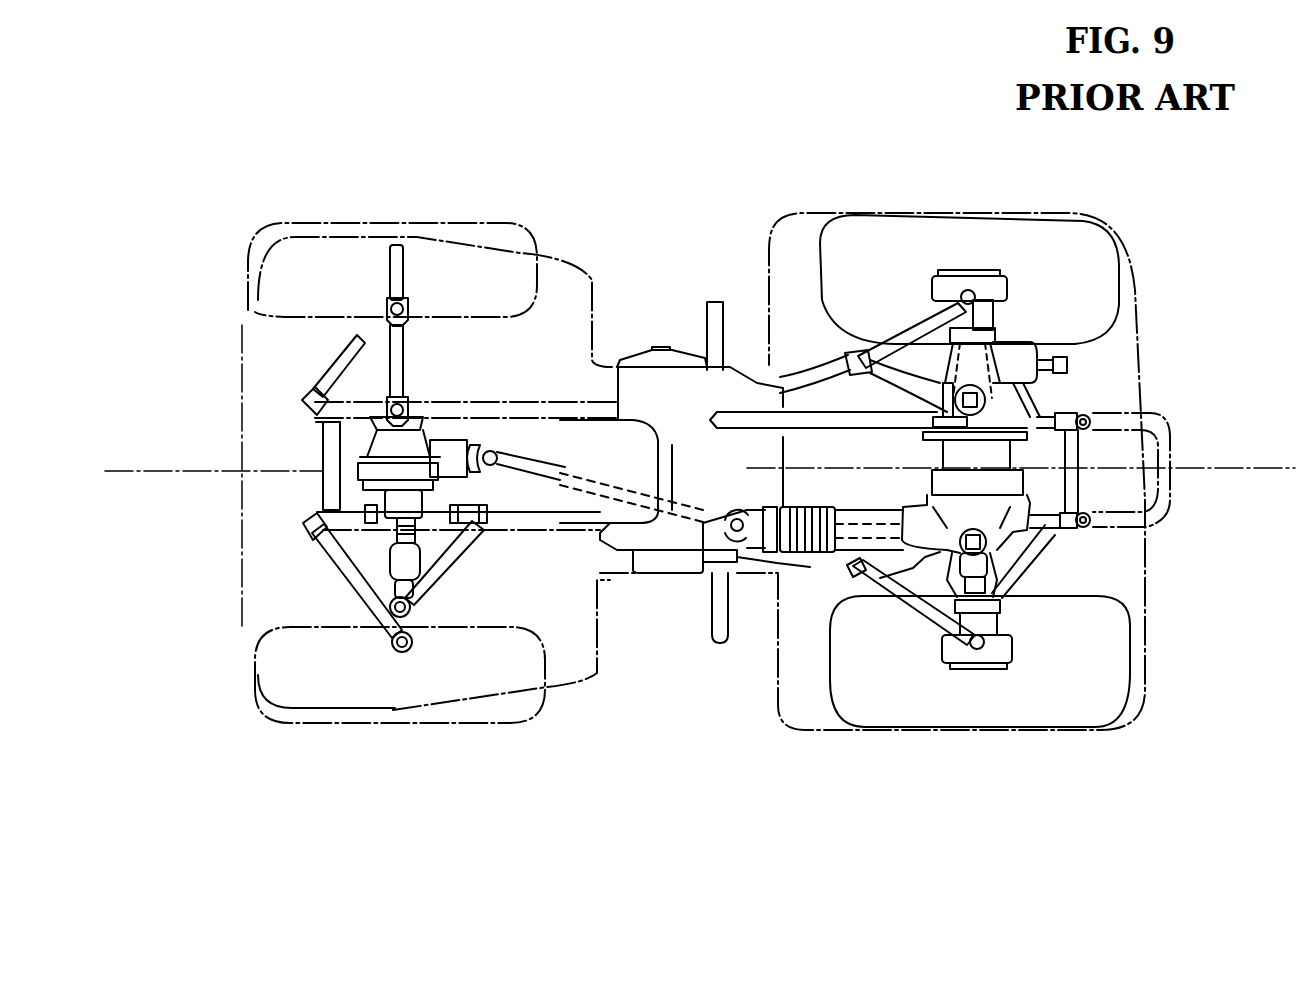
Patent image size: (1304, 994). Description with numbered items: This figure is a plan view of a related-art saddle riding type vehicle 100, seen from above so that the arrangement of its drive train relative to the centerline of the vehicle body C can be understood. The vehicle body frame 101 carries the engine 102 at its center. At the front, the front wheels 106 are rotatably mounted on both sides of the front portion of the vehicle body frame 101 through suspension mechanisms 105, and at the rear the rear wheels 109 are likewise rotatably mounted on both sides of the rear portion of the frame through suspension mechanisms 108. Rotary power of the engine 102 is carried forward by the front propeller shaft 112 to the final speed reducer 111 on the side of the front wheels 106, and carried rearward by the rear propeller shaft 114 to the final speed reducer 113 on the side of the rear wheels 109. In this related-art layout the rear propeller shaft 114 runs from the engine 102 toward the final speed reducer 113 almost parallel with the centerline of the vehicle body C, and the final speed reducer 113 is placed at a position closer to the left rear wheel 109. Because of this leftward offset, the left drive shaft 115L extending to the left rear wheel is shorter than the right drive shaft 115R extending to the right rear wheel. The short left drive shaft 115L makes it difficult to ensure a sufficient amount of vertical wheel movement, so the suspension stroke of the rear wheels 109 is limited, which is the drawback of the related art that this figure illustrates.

The saddle riding type vehicle 100 is at (228, 117).
The vehicle body frame 101 is at (512, 394).
The engine 102 is at (663, 577).
The suspension mechanism 105 is at (337, 356).
The front wheel 106 is at (363, 223).
The suspension mechanism 108 is at (1060, 389).
The rear wheel 109 is at (835, 225).
The final speed reducer 111 is at (355, 473).
The front propeller shaft 112 is at (565, 472).
The final speed reducer 113 is at (1036, 488).
The rear propeller shaft 114 is at (852, 538).
The right drive shaft 115R is at (993, 320).
The left drive shaft 115L is at (1000, 622).
The centerline of the vehicle body C is at (1225, 468).